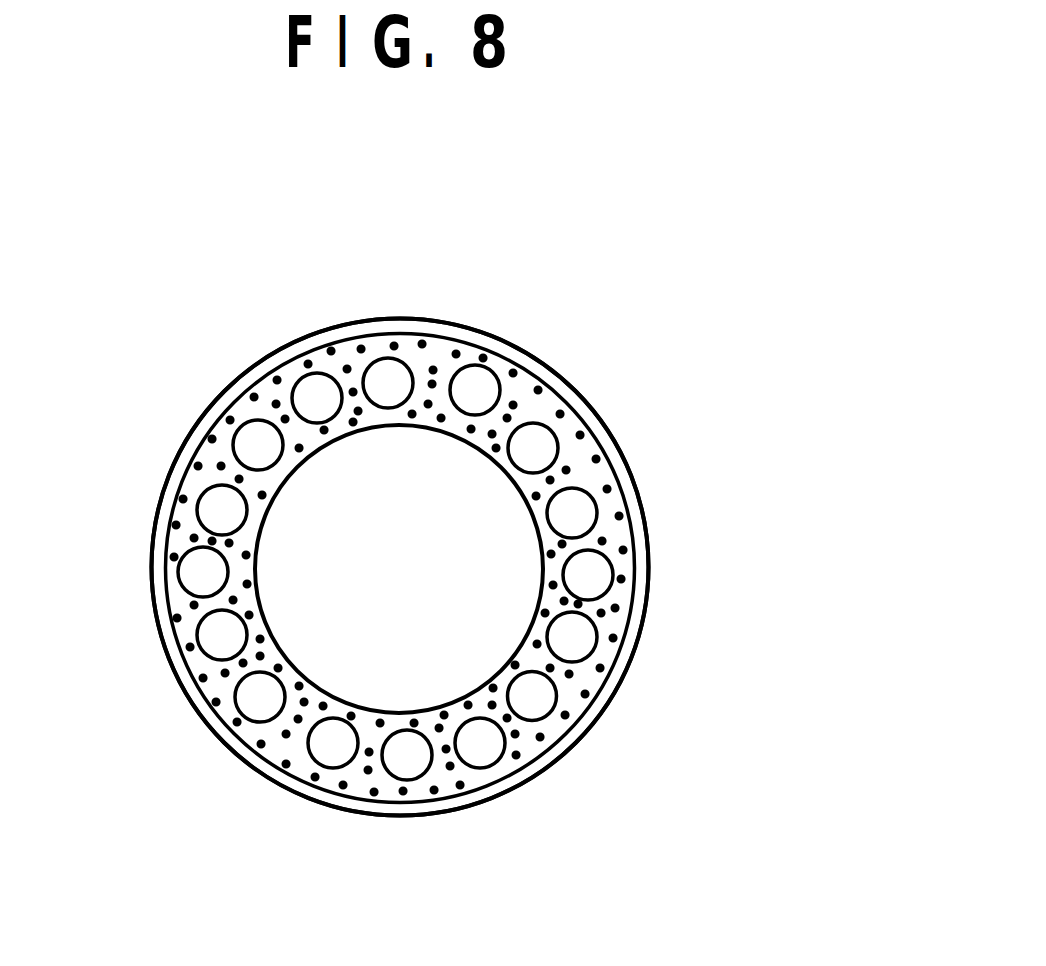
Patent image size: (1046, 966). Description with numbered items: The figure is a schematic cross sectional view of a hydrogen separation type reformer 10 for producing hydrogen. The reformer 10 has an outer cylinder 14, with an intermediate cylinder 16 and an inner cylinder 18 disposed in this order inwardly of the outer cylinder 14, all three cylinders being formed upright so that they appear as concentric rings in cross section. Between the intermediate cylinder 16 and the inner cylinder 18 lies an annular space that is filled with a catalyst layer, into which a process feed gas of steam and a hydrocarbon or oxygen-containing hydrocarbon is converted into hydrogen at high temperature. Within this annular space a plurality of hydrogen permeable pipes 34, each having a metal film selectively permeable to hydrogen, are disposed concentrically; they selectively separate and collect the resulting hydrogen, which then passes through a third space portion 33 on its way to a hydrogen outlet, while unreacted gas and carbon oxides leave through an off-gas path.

The hydrogen separation type reformer 10 is at (612, 418).
The outer cylinder 14 is at (152, 542).
The intermediate cylinder 16 is at (168, 624).
The inner cylinder 18 is at (266, 522).
The third space portion 33 is at (222, 507).
The hydrogen permeable pipes 34 is at (342, 762).